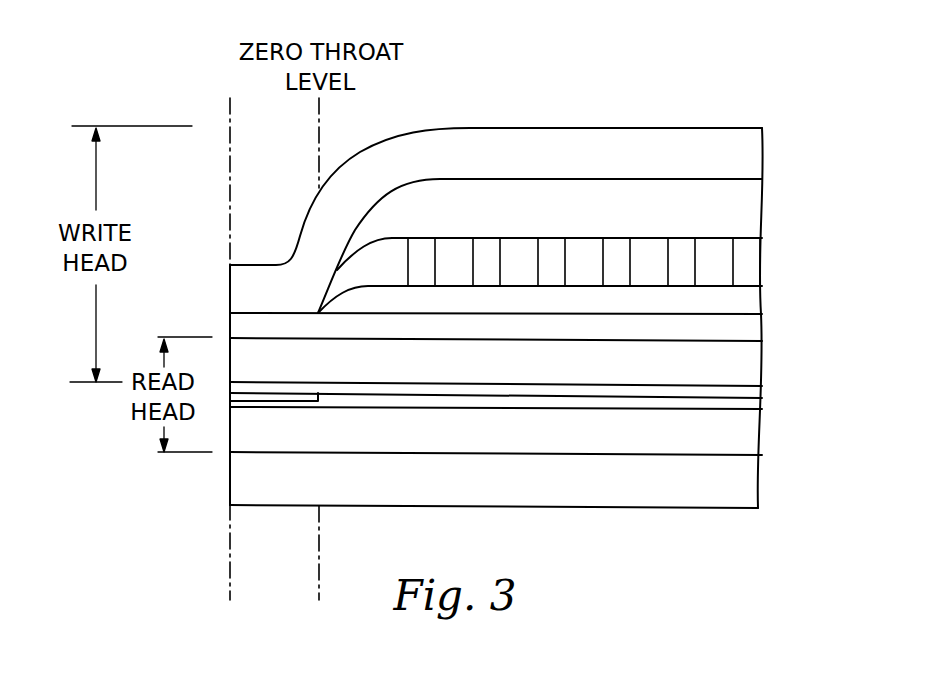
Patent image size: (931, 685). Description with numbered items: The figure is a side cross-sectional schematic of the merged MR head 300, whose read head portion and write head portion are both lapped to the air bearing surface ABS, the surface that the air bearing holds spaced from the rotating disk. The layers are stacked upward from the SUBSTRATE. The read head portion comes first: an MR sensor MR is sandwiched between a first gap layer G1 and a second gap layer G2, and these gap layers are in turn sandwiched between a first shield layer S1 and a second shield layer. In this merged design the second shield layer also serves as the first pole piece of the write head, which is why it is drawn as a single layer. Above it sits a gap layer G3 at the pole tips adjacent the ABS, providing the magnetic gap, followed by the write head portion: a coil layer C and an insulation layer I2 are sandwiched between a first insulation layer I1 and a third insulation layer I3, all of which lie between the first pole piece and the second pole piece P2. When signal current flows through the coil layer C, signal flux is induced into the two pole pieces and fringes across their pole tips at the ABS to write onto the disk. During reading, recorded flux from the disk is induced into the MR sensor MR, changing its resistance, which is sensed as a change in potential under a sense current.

The merged MR head 300 is at (614, 88).
The air bearing surface ABS is at (230, 144).
The second pole piece P2 is at (496, 196).
The third insulation layer I3 is at (540, 246).
The second insulation layer I2 is at (549, 259).
The coil layer C is at (584, 262).
The first insulation layer I1 is at (540, 299).
The third gap layer G3 is at (496, 326).
The second gap layer G2 is at (774, 388).
The first gap layer G1 is at (774, 406).
The MR sensor MR is at (288, 401).
The first shield layer S1 is at (496, 427).
The substrate SUBSTRATE is at (496, 480).